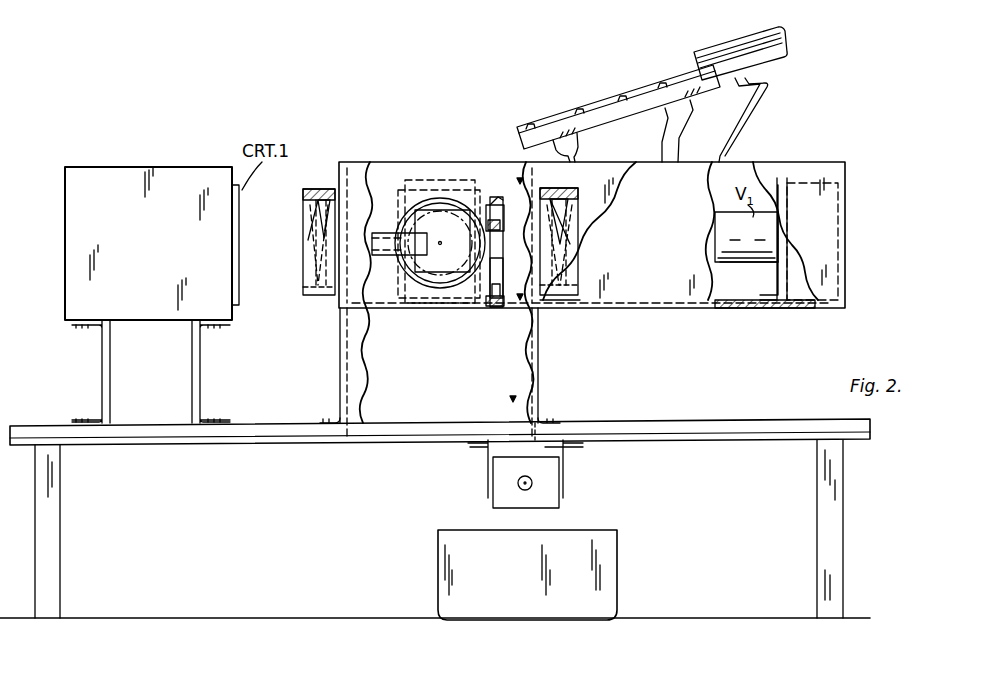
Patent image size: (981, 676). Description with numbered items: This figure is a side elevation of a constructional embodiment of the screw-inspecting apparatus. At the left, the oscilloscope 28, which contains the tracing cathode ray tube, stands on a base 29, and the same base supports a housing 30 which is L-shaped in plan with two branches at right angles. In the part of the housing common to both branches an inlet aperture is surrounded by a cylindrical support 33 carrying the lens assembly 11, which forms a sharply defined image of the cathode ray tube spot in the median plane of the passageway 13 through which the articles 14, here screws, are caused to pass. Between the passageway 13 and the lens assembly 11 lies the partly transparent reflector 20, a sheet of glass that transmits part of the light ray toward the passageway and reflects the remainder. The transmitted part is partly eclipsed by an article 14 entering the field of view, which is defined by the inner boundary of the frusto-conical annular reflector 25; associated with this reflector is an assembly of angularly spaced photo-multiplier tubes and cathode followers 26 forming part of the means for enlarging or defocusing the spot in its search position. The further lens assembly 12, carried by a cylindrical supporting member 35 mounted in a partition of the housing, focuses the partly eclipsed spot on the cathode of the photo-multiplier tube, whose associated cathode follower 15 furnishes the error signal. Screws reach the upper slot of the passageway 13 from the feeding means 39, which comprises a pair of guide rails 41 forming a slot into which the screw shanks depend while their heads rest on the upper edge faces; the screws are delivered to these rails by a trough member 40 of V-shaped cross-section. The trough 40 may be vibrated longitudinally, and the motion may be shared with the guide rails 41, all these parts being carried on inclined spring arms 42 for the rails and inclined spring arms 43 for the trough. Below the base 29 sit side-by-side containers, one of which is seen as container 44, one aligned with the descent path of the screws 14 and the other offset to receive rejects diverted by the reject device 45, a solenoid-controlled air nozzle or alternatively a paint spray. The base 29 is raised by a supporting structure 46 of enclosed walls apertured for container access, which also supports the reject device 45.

The lens assembly 11 is at (303, 215).
The further lens assembly 12 is at (570, 215).
The passageway 13 is at (498, 308).
The articles 14 is at (530, 122).
The cathode follower 15 is at (796, 305).
The partly transparent reflector 20 is at (440, 261).
The annular reflector 25 is at (490, 212).
The photo-multiplier tubes and cathode followers 26 is at (502, 198).
The oscilloscope 28 is at (150, 167).
The base 29 is at (152, 442).
The housing 30 is at (632, 308).
The cylindrical support 33 is at (306, 188).
The cylindrical supporting member 35 is at (563, 194).
The feeding means 39 is at (618, 91).
The trough member 40 is at (732, 52).
The guide rails 41 is at (636, 112).
The inclined spring arms 42 is at (575, 155).
The inclined spring arms 43 is at (738, 125).
The container 44 is at (617, 542).
The reject device 45 is at (497, 487).
The supporting structure 46 is at (52, 506).